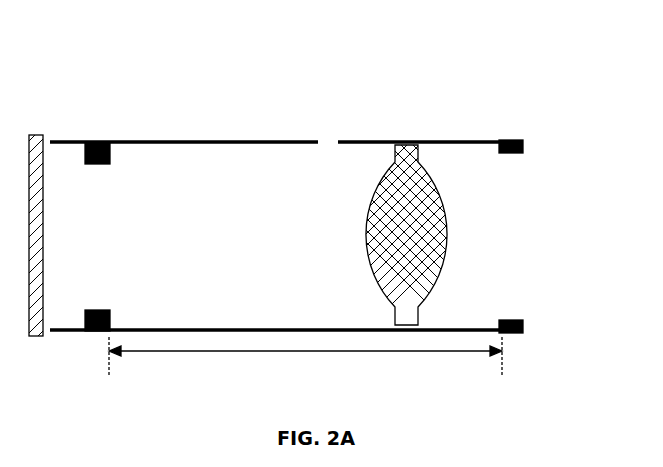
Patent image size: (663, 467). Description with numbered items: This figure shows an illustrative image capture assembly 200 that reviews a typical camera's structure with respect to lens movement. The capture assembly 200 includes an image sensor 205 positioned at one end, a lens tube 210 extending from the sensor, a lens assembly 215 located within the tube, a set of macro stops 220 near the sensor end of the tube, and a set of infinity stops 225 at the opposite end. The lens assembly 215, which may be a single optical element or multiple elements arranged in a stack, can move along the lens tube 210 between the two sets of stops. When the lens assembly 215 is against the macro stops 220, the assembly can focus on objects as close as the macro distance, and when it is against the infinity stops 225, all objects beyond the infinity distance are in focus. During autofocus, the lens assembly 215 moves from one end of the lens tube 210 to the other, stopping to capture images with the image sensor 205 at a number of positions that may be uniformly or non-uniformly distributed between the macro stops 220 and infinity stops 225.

The capture assembly 200 is at (505, 91).
The image sensor 205 is at (37, 135).
The lens tube 210 is at (70, 138).
The lens assembly 215 is at (388, 198).
The macro stops 220 is at (118, 172).
The infinity stops 225 is at (500, 157).